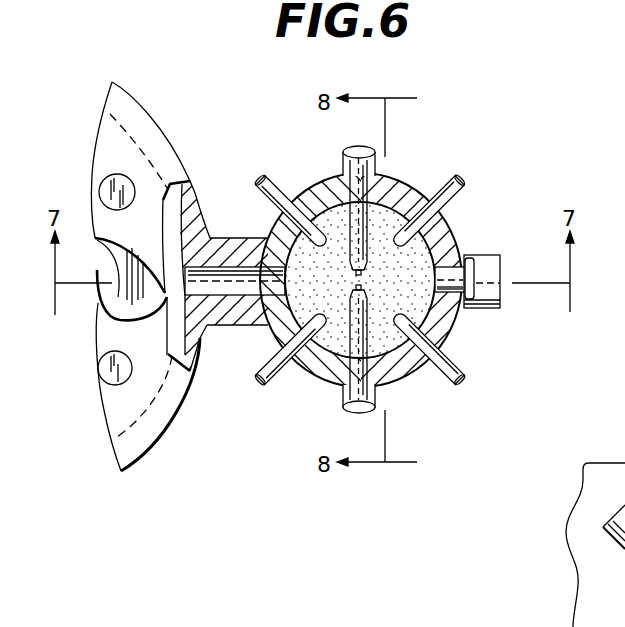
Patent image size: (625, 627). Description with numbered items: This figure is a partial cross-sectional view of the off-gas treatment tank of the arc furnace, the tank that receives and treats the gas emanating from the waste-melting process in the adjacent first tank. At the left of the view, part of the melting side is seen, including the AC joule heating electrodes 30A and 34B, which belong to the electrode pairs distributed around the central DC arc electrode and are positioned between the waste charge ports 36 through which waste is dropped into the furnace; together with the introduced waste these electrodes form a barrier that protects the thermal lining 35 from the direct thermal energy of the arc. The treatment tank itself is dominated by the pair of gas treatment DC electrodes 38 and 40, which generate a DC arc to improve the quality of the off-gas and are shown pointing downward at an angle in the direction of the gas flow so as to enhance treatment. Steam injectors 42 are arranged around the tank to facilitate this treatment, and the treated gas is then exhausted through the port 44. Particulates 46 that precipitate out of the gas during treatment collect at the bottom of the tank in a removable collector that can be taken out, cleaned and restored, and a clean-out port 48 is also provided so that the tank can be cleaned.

The AC joule heating electrode 30A is at (143, 443).
The AC joule heating electrode 34B is at (123, 187).
The thermal lining 35 is at (180, 403).
The waste charge port 36 is at (103, 300).
The gas treatment DC electrode 38 is at (356, 212).
The gas treatment DC electrode 40 is at (358, 348).
The steam injector 42 is at (275, 170).
The port 44 is at (502, 270).
The particulates 46 is at (450, 322).
The clean-out port 48 is at (473, 272).